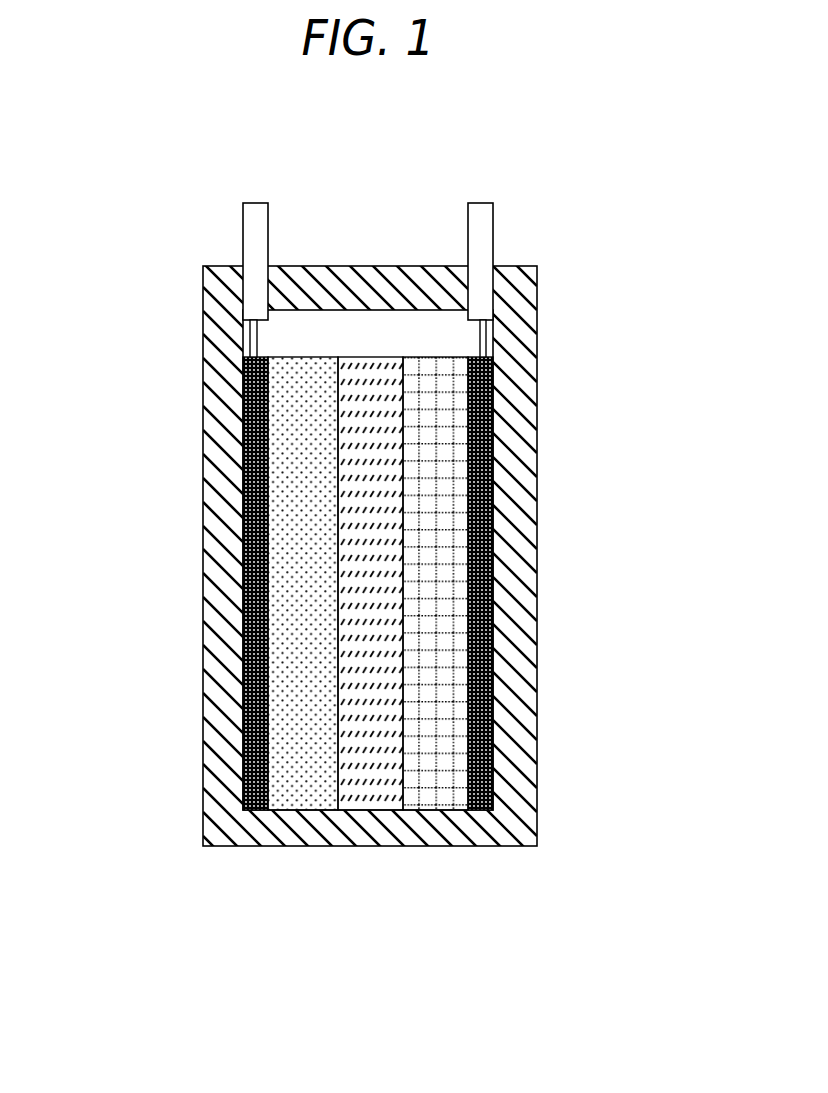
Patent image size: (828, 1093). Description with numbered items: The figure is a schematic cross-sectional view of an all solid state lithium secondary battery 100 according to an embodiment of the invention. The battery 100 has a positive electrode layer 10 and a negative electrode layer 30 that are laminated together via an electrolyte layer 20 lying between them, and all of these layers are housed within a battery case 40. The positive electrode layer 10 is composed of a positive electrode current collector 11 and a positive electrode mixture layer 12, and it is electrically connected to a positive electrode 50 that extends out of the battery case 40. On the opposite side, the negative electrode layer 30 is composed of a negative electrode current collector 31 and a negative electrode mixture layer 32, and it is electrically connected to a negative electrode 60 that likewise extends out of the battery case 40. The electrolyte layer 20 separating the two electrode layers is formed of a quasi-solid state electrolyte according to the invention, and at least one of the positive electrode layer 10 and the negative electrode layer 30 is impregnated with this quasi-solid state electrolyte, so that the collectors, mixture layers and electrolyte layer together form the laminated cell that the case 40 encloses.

The all solid state lithium secondary battery 100 is at (407, 190).
The positive electrode layer 10 is at (197, 583).
The positive electrode current collector 11 is at (240, 606).
The positive electrode mixture layer 12 is at (290, 560).
The electrolyte layer 20 is at (377, 790).
The negative electrode layer 30 is at (544, 583).
The negative electrode current collector 31 is at (480, 606).
The negative electrode mixture layer 32 is at (445, 552).
The battery case 40 is at (203, 420).
The positive electrode 50 is at (250, 220).
The negative electrode 60 is at (480, 222).